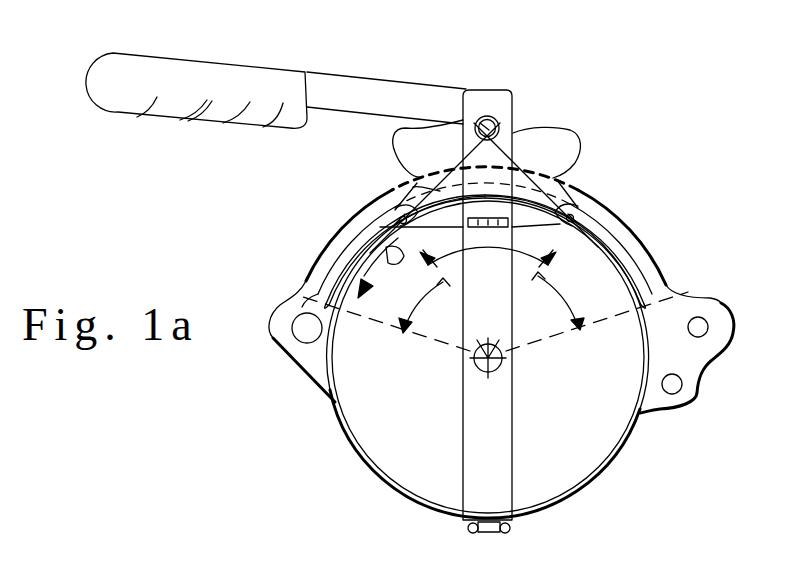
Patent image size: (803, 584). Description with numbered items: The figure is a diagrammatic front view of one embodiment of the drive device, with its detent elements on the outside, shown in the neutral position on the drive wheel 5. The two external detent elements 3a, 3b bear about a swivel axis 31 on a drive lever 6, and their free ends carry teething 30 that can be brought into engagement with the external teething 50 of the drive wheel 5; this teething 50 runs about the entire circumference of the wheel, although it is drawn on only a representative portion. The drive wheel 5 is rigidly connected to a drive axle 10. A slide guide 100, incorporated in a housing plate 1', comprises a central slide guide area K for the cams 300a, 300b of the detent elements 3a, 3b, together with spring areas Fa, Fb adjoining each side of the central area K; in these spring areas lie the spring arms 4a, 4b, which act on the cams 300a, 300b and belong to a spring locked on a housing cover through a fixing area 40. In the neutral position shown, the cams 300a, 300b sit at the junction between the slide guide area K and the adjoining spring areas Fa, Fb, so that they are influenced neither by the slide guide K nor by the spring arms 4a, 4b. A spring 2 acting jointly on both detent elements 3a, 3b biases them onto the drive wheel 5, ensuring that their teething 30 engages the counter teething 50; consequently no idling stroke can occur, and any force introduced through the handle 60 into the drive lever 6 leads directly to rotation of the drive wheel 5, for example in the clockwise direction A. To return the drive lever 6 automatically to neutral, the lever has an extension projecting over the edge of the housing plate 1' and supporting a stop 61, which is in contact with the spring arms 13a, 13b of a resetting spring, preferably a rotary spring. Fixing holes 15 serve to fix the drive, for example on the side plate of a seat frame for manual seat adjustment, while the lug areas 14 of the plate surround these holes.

The housing plate 1' is at (294, 379).
The spring 2 is at (573, 135).
The detent element 3a is at (396, 158).
The detent element 3b is at (560, 174).
The spring arm 4a is at (346, 294).
The spring arm 4b is at (607, 246).
The drive wheel 5 is at (377, 470).
The drive lever 6 is at (372, 90).
The drive axle 10 is at (503, 363).
The spring arm 13a is at (472, 533).
The spring arm 13b is at (513, 533).
The mounting lug 14 is at (300, 312).
The fixing holes 15 is at (292, 320).
The teething 30 is at (413, 187).
The swivel axis 31 is at (468, 116).
The fixing area 40 is at (482, 217).
The external teething 50 is at (393, 227).
The handle 60 is at (243, 76).
The stop 61 is at (487, 533).
The slide guide 100 is at (640, 277).
The cam 300a is at (400, 217).
The cam 300b is at (570, 207).
The clockwise direction A is at (640, 583).
The central slide guide area K is at (488, 266).
The spring area Fa is at (424, 306).
The spring area Fb is at (558, 301).